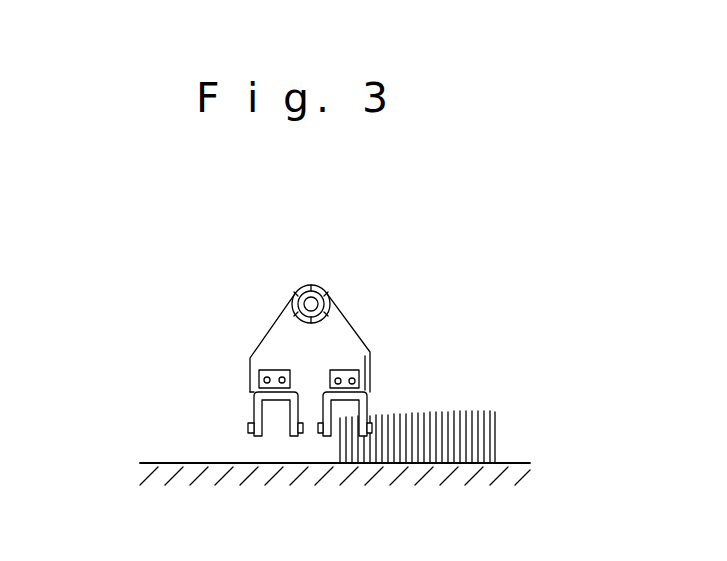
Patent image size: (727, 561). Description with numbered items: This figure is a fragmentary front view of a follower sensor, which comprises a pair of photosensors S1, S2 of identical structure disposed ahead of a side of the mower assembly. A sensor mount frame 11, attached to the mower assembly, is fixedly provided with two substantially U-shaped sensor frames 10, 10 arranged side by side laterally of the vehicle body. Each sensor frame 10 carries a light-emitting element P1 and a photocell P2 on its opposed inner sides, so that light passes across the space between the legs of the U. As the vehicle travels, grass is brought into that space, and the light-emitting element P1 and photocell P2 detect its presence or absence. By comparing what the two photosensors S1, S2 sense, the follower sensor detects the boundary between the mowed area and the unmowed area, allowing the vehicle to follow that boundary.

The sensor frame 10 is at (250, 407).
The sensor mount frame 11 is at (298, 293).
The photosensor S1 is at (383, 396).
The photosensor S2 is at (226, 408).
The light-emitting element P1 is at (322, 436).
The photocell P2 is at (248, 428).